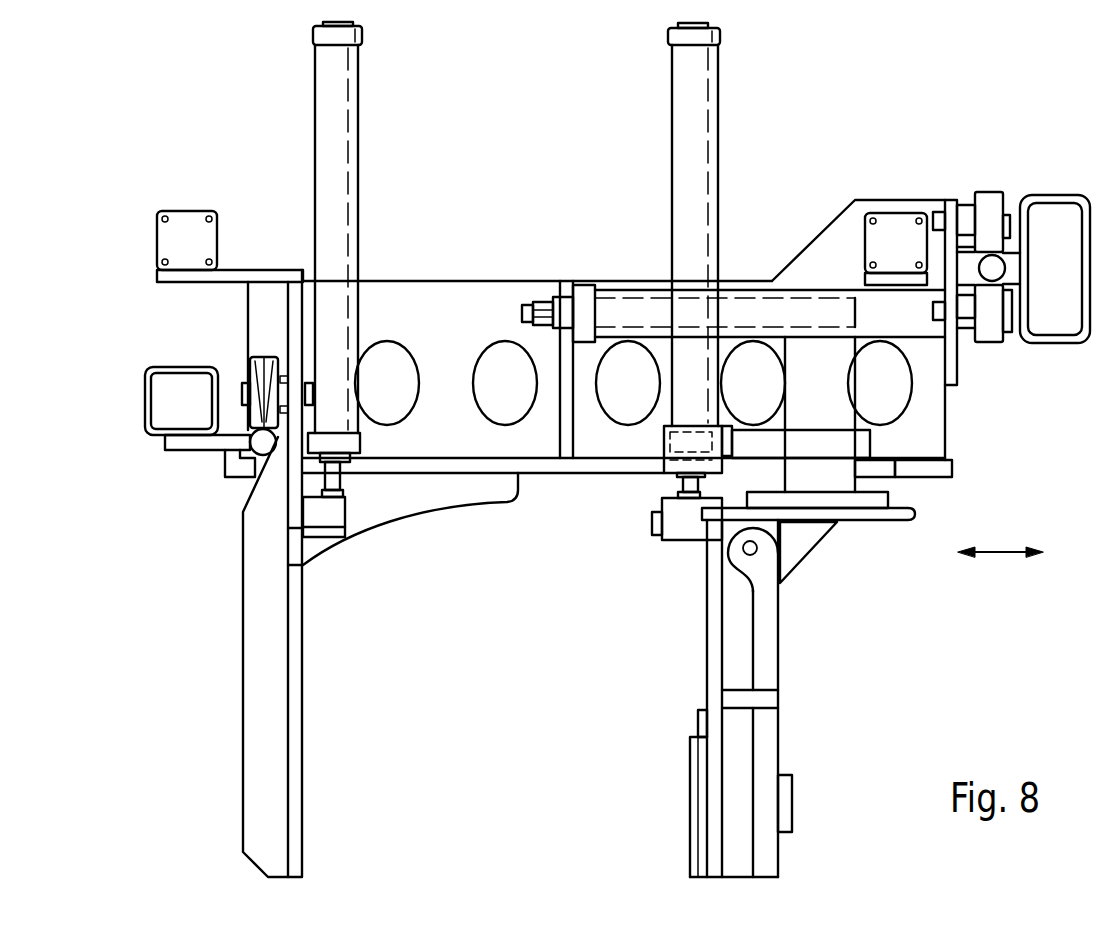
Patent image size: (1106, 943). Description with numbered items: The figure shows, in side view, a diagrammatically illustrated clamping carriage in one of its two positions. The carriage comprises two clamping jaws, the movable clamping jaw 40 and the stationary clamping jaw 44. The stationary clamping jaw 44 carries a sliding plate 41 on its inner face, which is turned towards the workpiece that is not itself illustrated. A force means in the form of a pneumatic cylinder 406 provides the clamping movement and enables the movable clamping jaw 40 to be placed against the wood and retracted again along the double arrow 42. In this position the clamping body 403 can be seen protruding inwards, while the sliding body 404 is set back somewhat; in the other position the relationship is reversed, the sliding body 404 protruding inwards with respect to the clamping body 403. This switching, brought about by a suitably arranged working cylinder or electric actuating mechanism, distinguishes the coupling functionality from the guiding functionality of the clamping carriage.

The movable clamping jaw 40 is at (268, 775).
The sliding plate 41 is at (293, 700).
The double arrow 42 is at (1002, 552).
The stationary clamping jaw 44 is at (740, 612).
The clamping body 403 is at (690, 775).
The sliding body 404 is at (698, 722).
The pneumatic cylinder 406 is at (760, 295).